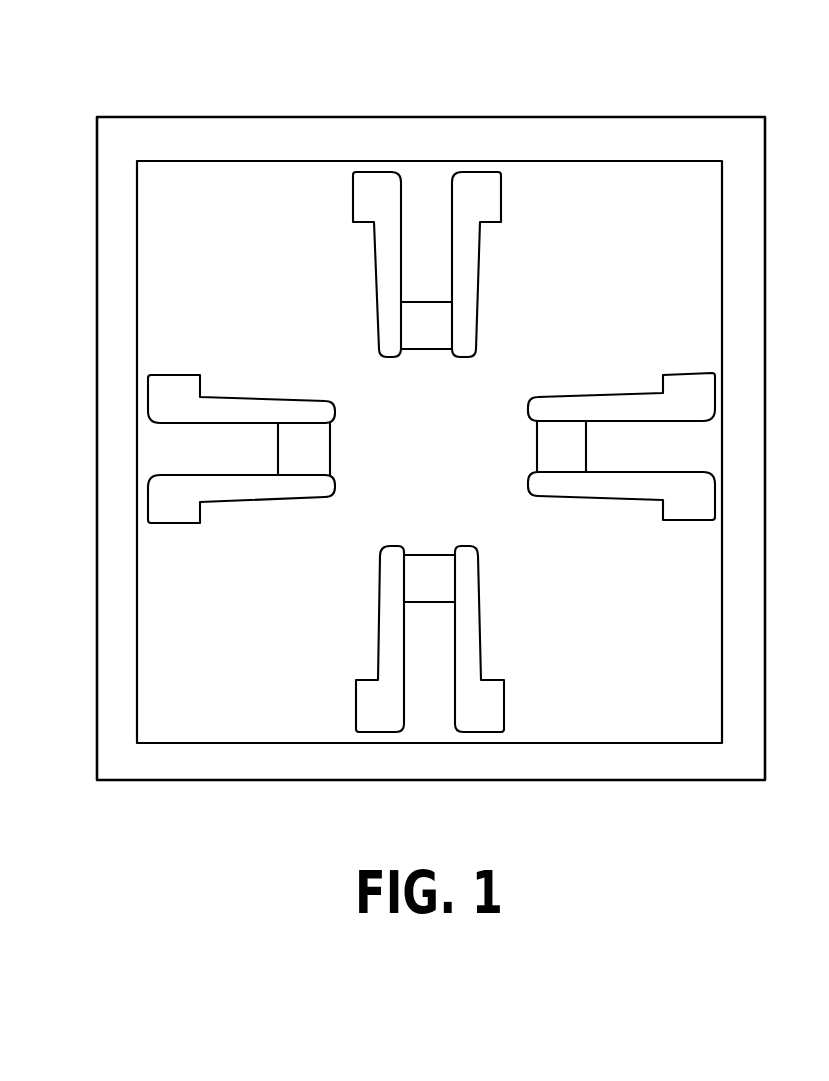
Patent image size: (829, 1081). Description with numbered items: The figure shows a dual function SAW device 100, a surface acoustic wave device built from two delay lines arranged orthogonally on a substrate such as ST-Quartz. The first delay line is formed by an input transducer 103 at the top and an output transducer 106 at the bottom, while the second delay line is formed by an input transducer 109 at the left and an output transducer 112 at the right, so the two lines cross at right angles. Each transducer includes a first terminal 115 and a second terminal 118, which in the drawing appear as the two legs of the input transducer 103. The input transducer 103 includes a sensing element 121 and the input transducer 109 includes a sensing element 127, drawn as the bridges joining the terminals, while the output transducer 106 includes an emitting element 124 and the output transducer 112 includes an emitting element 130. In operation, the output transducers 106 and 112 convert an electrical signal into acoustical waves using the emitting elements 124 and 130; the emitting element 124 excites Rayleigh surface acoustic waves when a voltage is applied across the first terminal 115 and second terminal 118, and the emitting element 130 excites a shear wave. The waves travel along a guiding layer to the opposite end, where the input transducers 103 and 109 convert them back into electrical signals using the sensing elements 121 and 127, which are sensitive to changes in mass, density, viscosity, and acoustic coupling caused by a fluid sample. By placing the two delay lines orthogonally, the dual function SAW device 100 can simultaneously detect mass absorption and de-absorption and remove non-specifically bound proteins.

The dual function SAW device 100 is at (124, 62).
The input transducer 103 is at (402, 297).
The output transducer 106 is at (387, 604).
The input transducer 109 is at (279, 412).
The output transducer 112 is at (586, 405).
The first terminal 115 is at (353, 222).
The second terminal 118 is at (501, 222).
The sensing element 121 is at (428, 349).
The emitting element 124 is at (428, 555).
The sensing element 127 is at (335, 447).
The emitting element 130 is at (537, 448).